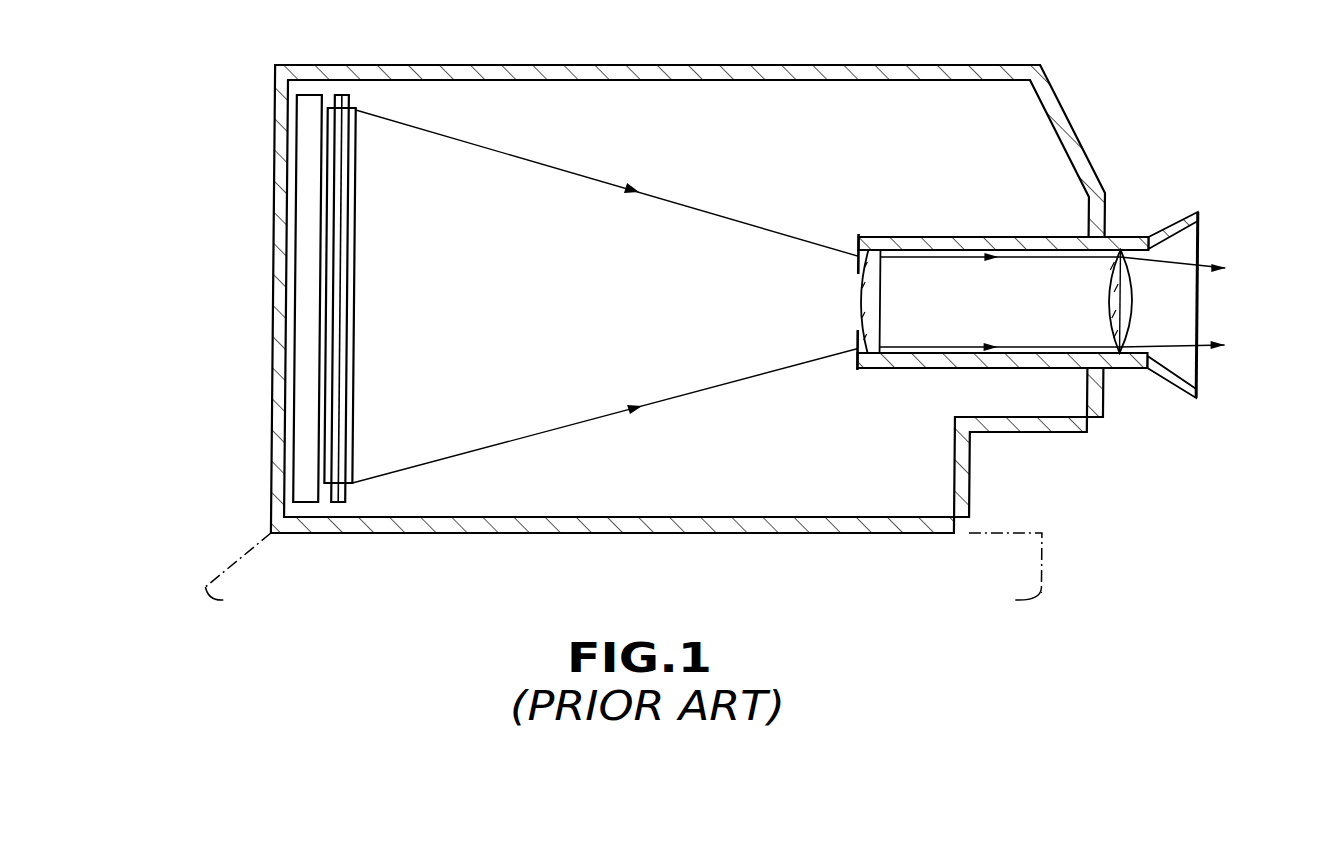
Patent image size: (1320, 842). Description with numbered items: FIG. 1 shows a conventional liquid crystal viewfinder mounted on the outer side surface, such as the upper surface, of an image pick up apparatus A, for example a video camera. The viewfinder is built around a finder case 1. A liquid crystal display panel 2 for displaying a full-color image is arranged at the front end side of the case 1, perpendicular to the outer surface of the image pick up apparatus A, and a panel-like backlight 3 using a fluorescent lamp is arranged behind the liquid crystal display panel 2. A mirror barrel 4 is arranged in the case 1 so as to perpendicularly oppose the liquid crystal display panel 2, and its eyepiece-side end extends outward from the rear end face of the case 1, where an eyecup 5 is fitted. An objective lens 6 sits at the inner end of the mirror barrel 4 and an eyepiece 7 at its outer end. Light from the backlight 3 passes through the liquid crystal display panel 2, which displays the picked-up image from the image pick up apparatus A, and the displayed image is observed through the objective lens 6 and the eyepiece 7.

The finder case 1 is at (787, 72).
The liquid crystal display panel 2 is at (356, 298).
The backlight 3 is at (308, 256).
The mirror barrel 4 is at (1008, 237).
The eyecup 5 is at (1173, 232).
The objective lens 6 is at (868, 295).
The eyepiece 7 is at (1130, 300).
The image pick up apparatus A is at (1046, 548).